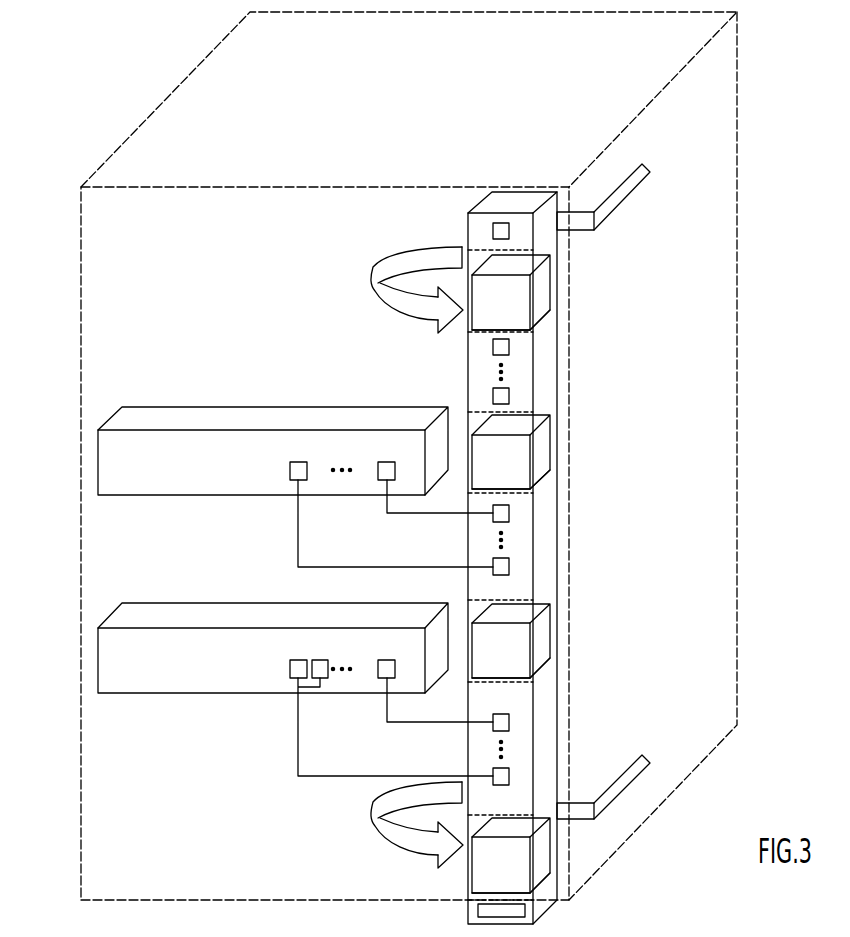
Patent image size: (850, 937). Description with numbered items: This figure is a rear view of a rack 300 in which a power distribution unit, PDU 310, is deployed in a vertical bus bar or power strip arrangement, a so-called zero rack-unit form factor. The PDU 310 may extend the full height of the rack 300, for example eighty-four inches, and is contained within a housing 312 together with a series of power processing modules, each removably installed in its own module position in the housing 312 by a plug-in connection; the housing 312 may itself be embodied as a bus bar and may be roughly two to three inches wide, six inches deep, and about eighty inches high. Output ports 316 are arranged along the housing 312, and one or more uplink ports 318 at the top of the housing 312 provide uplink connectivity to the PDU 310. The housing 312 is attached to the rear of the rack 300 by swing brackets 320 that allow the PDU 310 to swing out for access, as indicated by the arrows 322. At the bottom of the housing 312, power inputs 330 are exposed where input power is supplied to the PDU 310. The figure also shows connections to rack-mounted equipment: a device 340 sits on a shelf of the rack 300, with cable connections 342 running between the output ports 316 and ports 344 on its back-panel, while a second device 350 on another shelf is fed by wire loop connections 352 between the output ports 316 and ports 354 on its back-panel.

The rack 300 is at (81, 267).
The PDU 310 is at (590, 378).
The housing 312 is at (545, 237).
The output ports 316 is at (493, 397).
The uplink ports 318 is at (493, 232).
The swing brackets 320 is at (625, 200).
The arrows 322 is at (372, 283).
The power inputs 330 is at (525, 910).
The device 340 is at (273, 432).
The cable connections 342 is at (431, 567).
The ports 344 is at (290, 475).
The device 350 is at (273, 631).
The wire loop connections 352 is at (354, 690).
The ports 354 is at (290, 667).